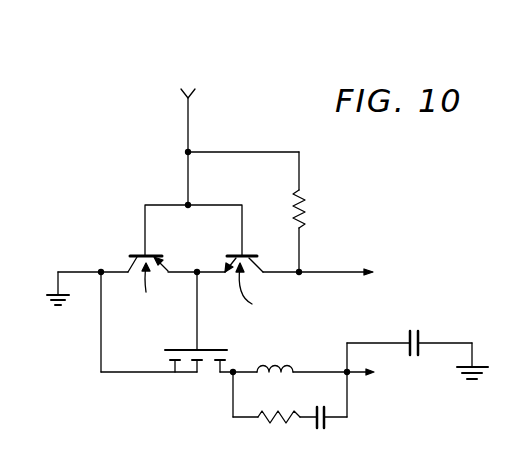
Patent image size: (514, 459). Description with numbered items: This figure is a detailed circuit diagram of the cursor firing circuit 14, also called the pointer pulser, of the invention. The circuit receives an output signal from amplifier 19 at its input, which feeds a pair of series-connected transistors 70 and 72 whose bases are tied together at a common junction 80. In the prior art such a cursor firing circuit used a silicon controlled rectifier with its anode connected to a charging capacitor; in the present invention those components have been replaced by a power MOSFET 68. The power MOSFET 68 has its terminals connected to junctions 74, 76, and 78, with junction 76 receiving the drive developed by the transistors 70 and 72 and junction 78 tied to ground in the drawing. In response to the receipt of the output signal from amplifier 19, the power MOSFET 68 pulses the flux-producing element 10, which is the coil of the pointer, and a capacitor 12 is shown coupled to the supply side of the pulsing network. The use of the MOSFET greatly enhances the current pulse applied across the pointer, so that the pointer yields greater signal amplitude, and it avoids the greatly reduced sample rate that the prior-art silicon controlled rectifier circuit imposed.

The flux-producing element 10 is at (273, 364).
The capacitor 12 is at (419, 356).
The cursor firing circuit 14 is at (271, 114).
The amplifier 19 is at (184, 90).
The power MOSFET 68 is at (196, 389).
The transistor 70 is at (141, 255).
The transistor 72 is at (244, 256).
The junction 74 is at (235, 371).
The junction 76 is at (196, 264).
The junction 78 is at (100, 270).
The common junction 80 is at (192, 204).